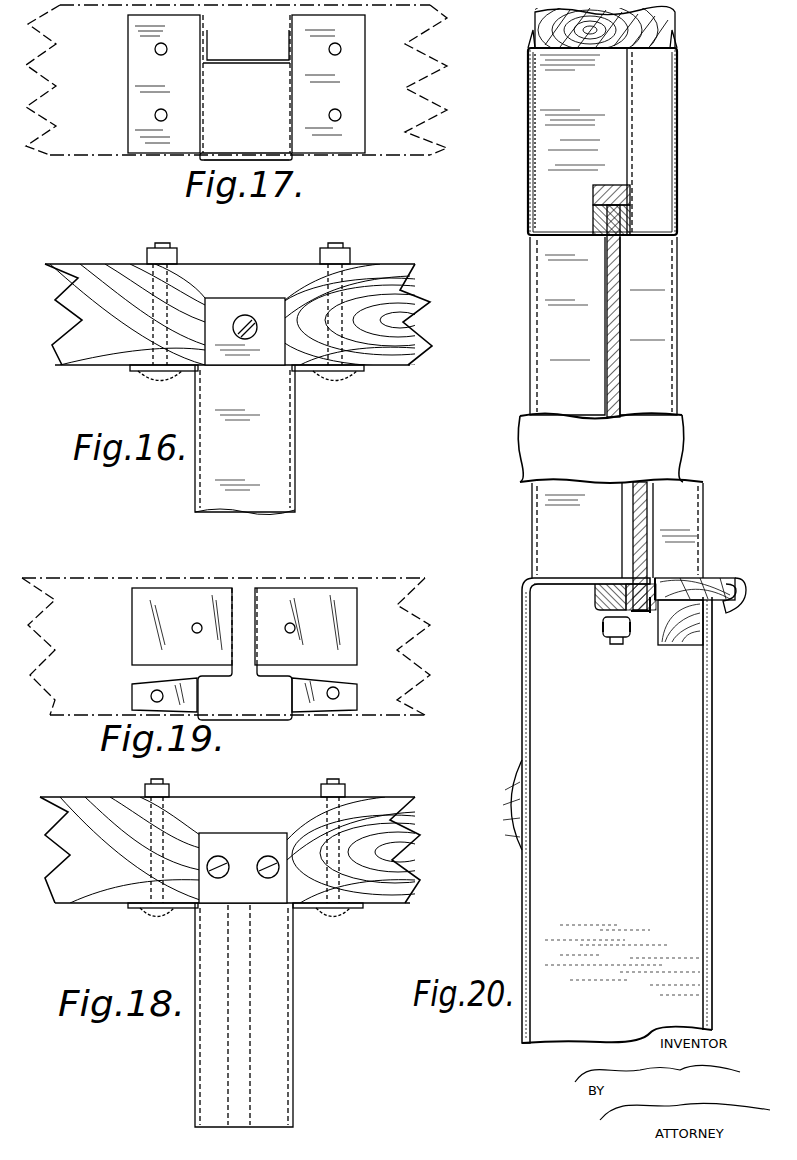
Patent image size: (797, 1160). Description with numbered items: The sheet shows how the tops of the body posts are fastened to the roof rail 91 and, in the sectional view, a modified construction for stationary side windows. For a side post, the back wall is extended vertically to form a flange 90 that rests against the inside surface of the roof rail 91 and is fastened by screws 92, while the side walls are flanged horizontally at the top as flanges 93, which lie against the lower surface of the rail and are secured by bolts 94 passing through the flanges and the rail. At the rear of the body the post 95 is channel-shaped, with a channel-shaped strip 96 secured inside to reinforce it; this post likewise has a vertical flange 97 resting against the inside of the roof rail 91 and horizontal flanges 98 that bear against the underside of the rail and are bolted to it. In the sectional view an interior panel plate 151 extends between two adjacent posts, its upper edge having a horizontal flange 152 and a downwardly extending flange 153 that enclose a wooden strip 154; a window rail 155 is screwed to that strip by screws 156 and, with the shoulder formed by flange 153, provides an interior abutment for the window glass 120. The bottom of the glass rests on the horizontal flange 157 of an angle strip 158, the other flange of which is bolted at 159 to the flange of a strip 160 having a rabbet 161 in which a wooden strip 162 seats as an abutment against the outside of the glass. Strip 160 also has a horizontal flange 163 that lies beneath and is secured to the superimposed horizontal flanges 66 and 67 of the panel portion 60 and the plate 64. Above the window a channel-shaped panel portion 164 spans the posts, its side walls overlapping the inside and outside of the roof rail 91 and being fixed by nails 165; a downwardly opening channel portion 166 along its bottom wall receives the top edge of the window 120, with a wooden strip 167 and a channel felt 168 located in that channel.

In FIG. 20, the panel portion 60 is at (525, 733).
In FIG. 20, the plate 64 is at (528, 733).
In FIG. 20, the upper horizontal flange 66 is at (537, 545).
In FIG. 20, the horizontal flange 67 is at (528, 582).
In FIG. 18, the flange 90 is at (248, 838).
In FIG. 17, the roof rail 91 is at (112, 152).
In FIG. 16, the roof rail 91 is at (385, 268).
In FIG. 19, the roof rail 91 is at (82, 562).
In FIG. 18, the roof rail 91 is at (378, 805).
In FIG. 20, the roof rail 91 is at (685, 15).
In FIG. 18, the screws 92 is at (272, 878).
In FIG. 19, the horizontal flanges 93 is at (143, 595).
In FIG. 18, the horizontal flanges 93 is at (185, 905).
In FIG. 18, the bolts 94 is at (338, 786).
In FIG. 17, the rear post 95 is at (218, 160).
In FIG. 16, the rear post 95 is at (278, 460).
In FIG. 17, the channel-shaped strip 96 is at (237, 62).
In FIG. 17, the vertical flange 97 is at (276, 146).
In FIG. 16, the vertical flange 97 is at (292, 340).
In FIG. 17, the horizontal flanges 98 is at (140, 85).
In FIG. 16, the horizontal flanges 98 is at (148, 375).
In FIG. 20, the window glass 120 is at (615, 370).
In FIG. 20, the interior panel plate 151 is at (712, 828).
In FIG. 20, the horizontal flange 152 is at (736, 579).
In FIG. 20, the downwardly extending flange 153 is at (652, 616).
In FIG. 20, the wooden strip 154 is at (690, 650).
In FIG. 20, the window rail 155 is at (700, 577).
In FIG. 20, the screws 156 is at (665, 570).
In FIG. 20, the horizontal flange 157 is at (637, 620).
In FIG. 20, the angle strip 158 is at (614, 642).
In FIG. 20, the bolt 159 is at (610, 628).
In FIG. 20, the strip 160 is at (618, 634).
In FIG. 20, the rabbet 161 is at (603, 608).
In FIG. 20, the wooden strip 162 is at (597, 594).
In FIG. 20, the horizontal flange 163 is at (560, 590).
In FIG. 20, the panel portion 164 is at (680, 148).
In FIG. 20, the nails 165 is at (690, 28).
In FIG. 20, the channel portion 166 is at (600, 200).
In FIG. 20, the wooden strip 167 is at (630, 192).
In FIG. 20, the channel felt 168 is at (632, 218).